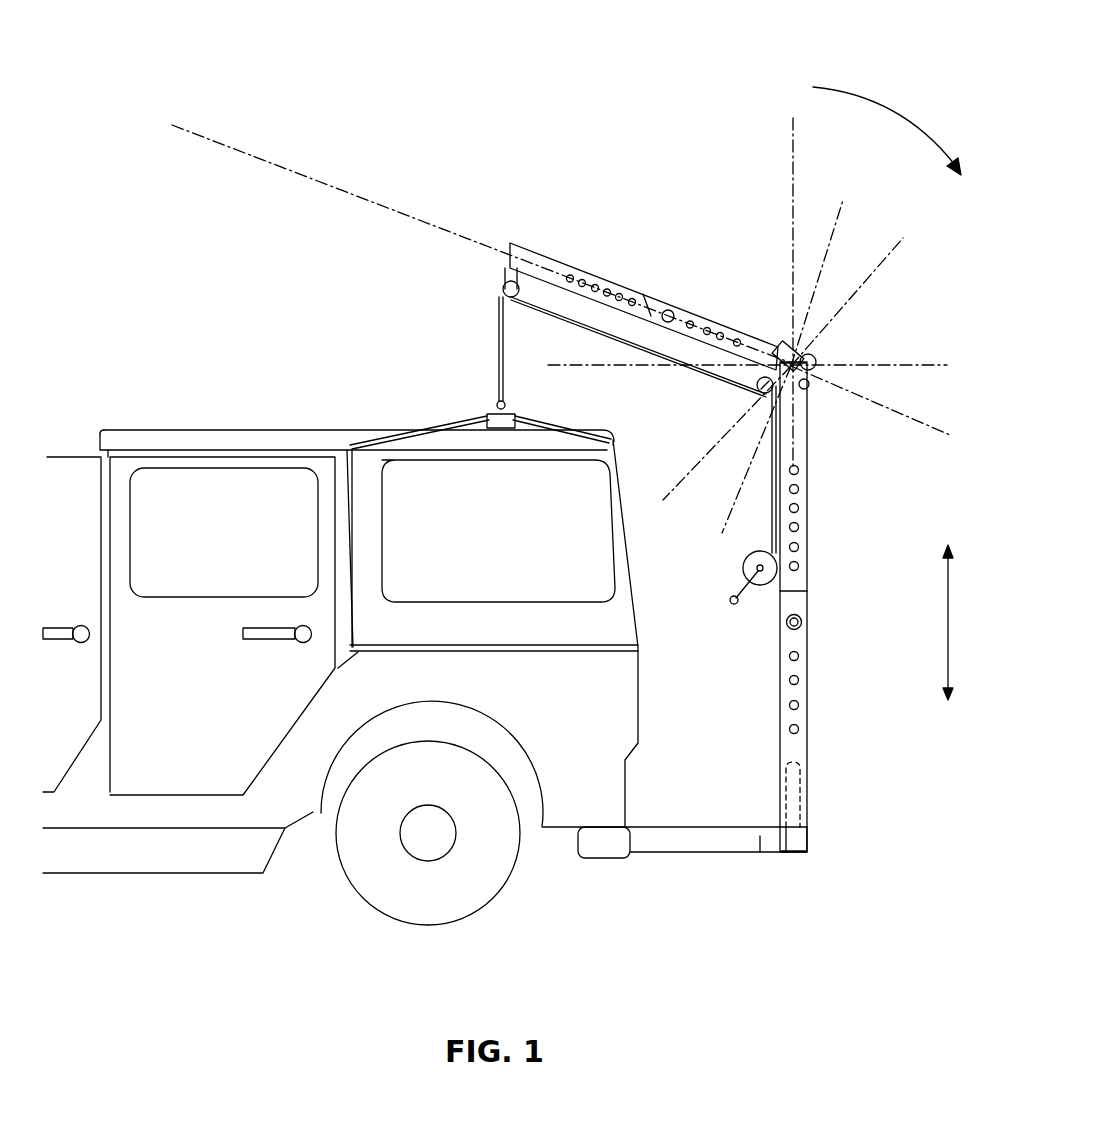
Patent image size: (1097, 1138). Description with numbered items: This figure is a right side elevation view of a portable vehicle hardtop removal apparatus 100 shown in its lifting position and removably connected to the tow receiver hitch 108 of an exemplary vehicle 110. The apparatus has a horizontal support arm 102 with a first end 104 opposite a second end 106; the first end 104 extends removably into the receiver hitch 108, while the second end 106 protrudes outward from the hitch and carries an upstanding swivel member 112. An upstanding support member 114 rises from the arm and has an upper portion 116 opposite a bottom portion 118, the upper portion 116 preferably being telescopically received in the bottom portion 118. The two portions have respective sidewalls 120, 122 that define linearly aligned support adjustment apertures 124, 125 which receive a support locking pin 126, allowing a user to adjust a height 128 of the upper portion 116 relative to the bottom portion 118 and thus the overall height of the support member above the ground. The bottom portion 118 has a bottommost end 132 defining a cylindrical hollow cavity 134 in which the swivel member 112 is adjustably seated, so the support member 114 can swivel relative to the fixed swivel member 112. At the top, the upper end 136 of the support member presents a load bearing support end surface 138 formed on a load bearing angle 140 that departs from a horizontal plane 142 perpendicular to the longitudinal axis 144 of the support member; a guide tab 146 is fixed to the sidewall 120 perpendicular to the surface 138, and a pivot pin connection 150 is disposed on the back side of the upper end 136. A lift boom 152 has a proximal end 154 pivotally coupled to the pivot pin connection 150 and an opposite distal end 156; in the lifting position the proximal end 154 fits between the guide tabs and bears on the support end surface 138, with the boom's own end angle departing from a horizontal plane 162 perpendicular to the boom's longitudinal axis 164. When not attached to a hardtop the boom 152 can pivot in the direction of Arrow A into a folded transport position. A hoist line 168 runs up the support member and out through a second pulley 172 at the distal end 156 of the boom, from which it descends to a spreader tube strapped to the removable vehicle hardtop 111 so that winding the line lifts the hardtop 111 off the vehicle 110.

The portable vehicle hardtop removal apparatus 100 is at (538, 168).
The horizontal support arm 102 is at (728, 838).
The first end 104 is at (657, 838).
The second end 106 is at (760, 840).
The tow receiver hitch 108 is at (603, 848).
The vehicle 110 is at (318, 785).
The removable vehicle hardtop 111 is at (315, 437).
The upstanding swivel member 112 is at (790, 808).
The upstanding support member 114 is at (790, 605).
The upper portion 116 is at (806, 455).
The bottom portion 118 is at (808, 688).
The sidewall 120 is at (808, 420).
The sidewall 122 is at (798, 718).
The support adjustment apertures 124 is at (800, 547).
The support adjustment apertures 125 is at (800, 680).
The support locking pin 126 is at (802, 622).
The height 128 is at (914, 621).
The bottommost end 132 is at (802, 813).
The cylindrical hollow cavity 134 is at (788, 830).
The upper end 136 is at (818, 358).
The load bearing support end surface 138 is at (803, 378).
The load bearing angle 140 is at (898, 248).
The horizontal plane 142 is at (900, 365).
The longitudinal axis 144 is at (796, 152).
The guide tab 146 is at (783, 338).
The pivot pin connection 150 is at (818, 362).
The lift boom 152 is at (638, 292).
The proximal end 154 is at (757, 342).
The distal end 156 is at (527, 248).
The horizontal plane 162 is at (733, 510).
The longitudinal axis 164 is at (243, 148).
The hoist line 168 is at (500, 360).
The second pulley 172 is at (523, 293).
The Arrow A is at (863, 88).